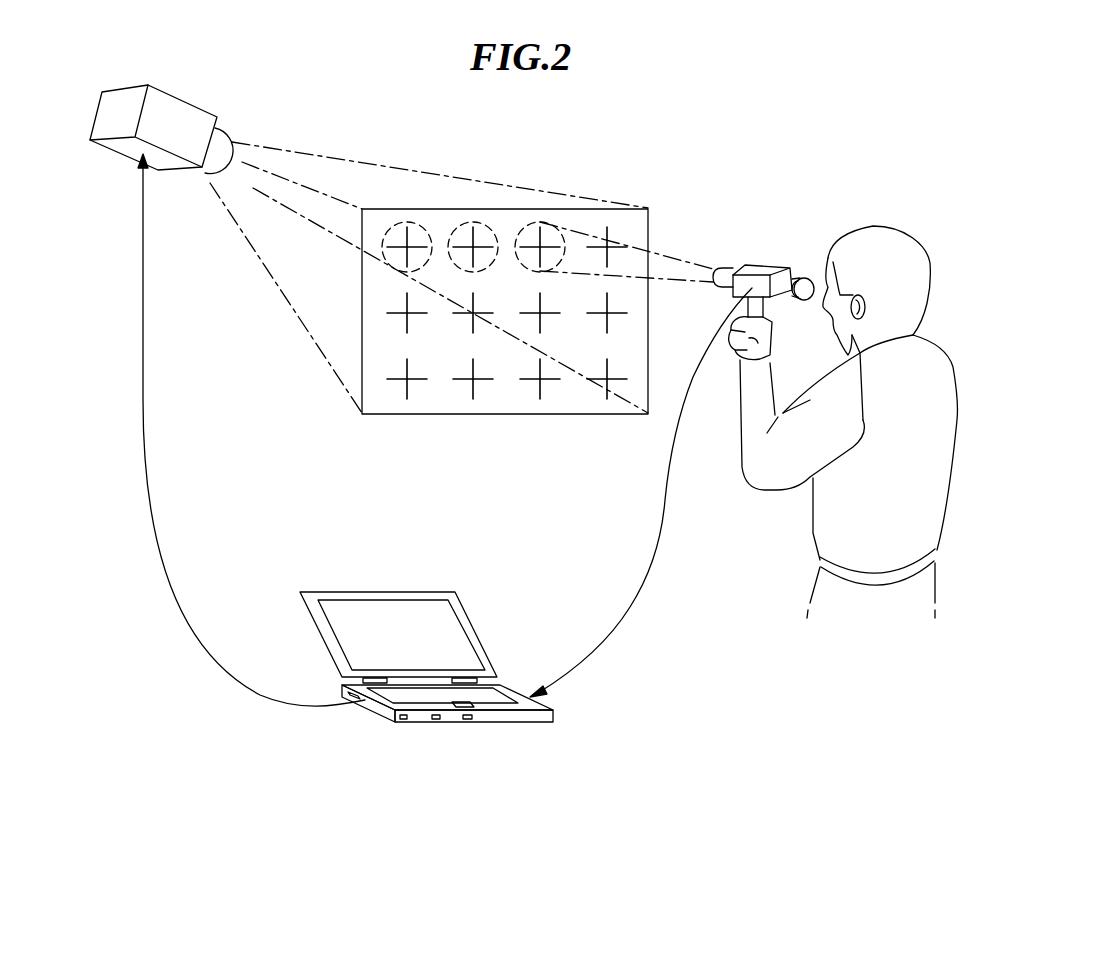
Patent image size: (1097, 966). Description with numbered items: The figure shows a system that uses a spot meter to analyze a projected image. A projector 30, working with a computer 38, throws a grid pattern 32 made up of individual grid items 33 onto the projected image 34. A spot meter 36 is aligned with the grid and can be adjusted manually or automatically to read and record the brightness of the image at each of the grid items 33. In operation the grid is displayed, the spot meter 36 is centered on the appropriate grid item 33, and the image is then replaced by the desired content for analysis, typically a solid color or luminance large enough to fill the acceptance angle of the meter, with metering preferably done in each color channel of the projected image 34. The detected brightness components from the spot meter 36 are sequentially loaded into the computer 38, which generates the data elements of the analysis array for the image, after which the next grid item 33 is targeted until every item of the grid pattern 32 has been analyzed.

The projector 30 is at (180, 98).
The grid pattern 32 is at (617, 368).
The grid item 33 is at (550, 390).
The projected image 34 is at (659, 183).
The spot meter 36 is at (760, 267).
The computer 38 is at (483, 717).